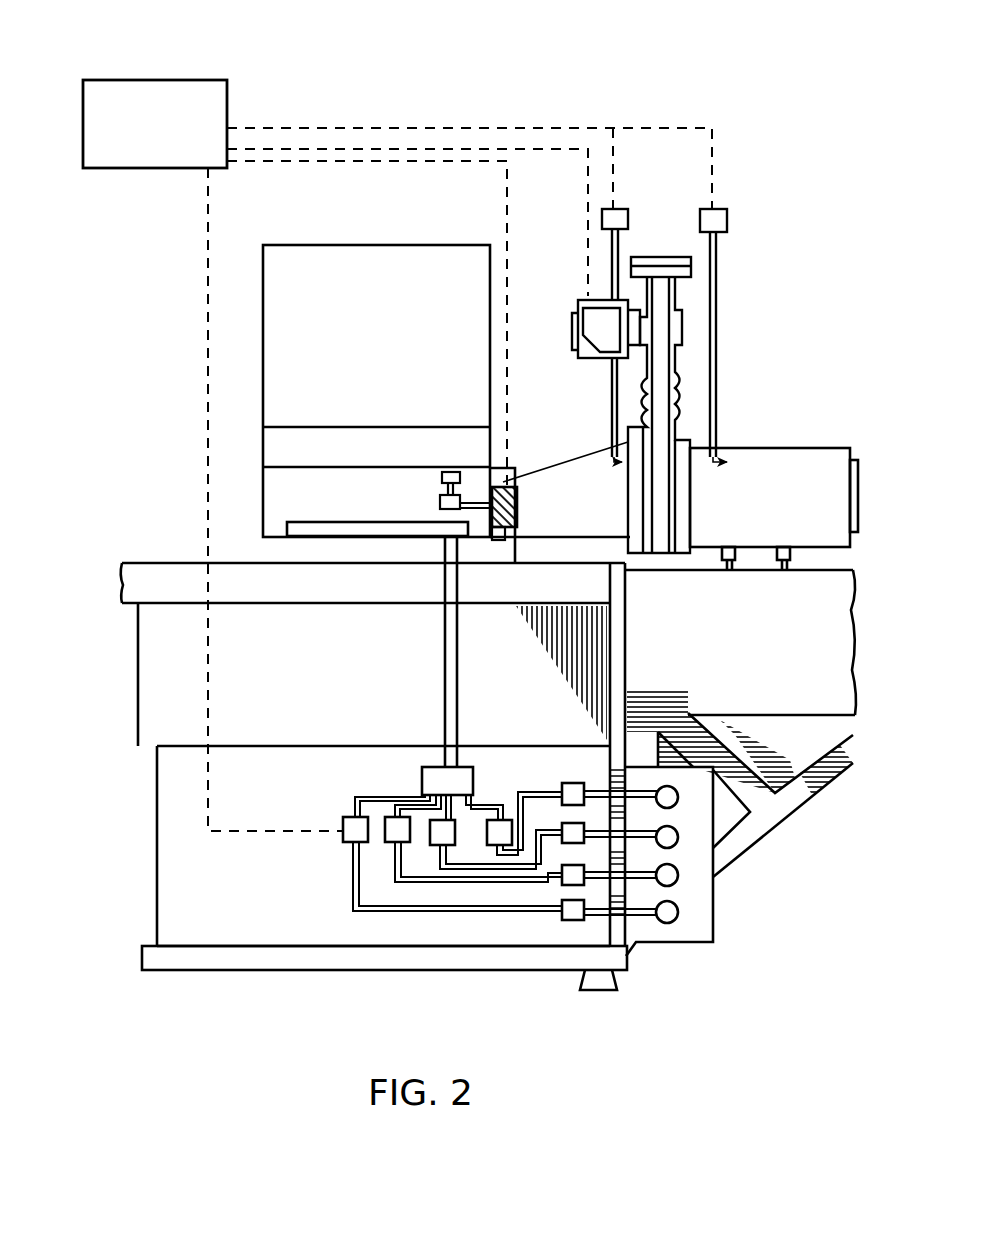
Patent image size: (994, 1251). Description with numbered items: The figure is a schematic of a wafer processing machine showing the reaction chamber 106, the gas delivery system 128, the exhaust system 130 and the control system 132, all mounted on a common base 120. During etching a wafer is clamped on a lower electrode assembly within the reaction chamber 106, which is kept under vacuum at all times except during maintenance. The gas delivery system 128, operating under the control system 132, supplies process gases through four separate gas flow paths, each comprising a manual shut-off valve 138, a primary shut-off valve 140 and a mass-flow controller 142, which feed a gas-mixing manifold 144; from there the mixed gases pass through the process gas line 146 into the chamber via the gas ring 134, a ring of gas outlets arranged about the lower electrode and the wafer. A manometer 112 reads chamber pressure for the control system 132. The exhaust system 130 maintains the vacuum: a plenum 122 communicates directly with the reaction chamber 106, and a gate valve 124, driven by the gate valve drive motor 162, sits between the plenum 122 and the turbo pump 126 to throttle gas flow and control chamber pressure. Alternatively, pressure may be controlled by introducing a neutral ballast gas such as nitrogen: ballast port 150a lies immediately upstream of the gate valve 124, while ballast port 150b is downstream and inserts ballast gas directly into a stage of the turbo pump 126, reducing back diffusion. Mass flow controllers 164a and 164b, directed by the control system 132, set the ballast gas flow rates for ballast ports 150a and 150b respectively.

The reaction chamber 106 is at (243, 488).
The manometer 112 is at (442, 503).
The base plate 120 is at (265, 925).
The plenum 122 is at (572, 487).
The gate valve 124 is at (662, 565).
The turbo pump 126 is at (806, 499).
The gas delivery system 128 is at (493, 990).
The exhaust system 130 is at (683, 103).
The control system 132 is at (163, 100).
The gas ring 134 is at (323, 522).
The manual shut-off valves 138 is at (673, 805).
The primary shut-off valves 140 is at (570, 836).
The mass-flow controllers 142 is at (493, 835).
The gas-mixing manifold 144 is at (433, 781).
The process gas line 146 is at (452, 660).
The ballast port 150a is at (612, 433).
The ballast port 150b is at (713, 433).
The gate valve drive motor 162 is at (584, 306).
The ballast gas mass flow controller 164a is at (618, 218).
The ballast gas mass flow controller 164b is at (720, 222).